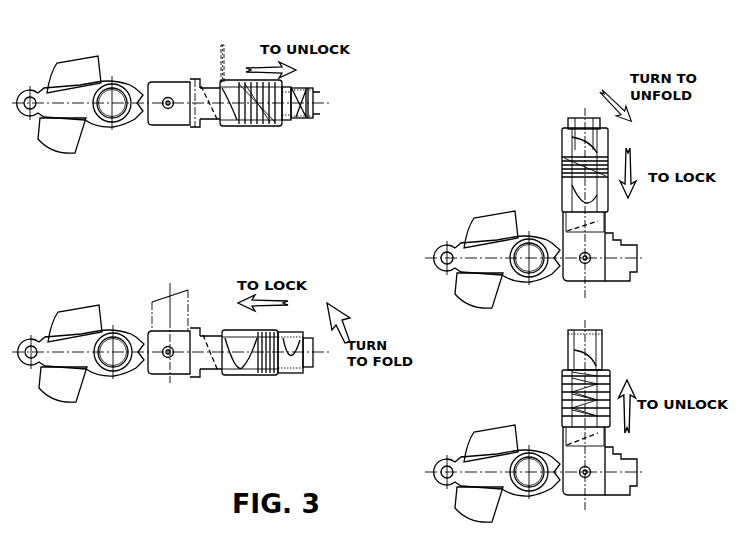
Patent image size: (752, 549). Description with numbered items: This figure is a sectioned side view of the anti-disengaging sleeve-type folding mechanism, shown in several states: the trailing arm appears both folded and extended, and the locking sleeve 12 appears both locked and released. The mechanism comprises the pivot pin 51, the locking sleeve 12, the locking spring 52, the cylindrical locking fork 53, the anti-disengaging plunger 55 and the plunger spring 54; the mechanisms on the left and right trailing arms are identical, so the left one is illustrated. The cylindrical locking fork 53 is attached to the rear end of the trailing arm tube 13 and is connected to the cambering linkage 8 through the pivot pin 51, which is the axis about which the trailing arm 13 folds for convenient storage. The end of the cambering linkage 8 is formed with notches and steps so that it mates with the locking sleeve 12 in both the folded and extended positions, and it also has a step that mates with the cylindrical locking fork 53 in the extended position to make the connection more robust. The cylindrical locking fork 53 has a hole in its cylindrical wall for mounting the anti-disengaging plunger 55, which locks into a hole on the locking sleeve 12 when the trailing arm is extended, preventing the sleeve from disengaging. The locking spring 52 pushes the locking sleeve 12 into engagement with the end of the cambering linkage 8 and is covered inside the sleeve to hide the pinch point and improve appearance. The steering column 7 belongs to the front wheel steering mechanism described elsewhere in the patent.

The steering column 7 is at (63, 135).
The cambering linkage 8 is at (102, 130).
The pivot pin 51 is at (170, 112).
The locking sleeve 12 is at (215, 130).
The locking spring 52 is at (245, 127).
The cylindrical locking fork 53 is at (282, 127).
The trailing arm tube 13 is at (295, 120).
The plunger spring 54 is at (307, 117).
The anti-disengaging plunger 55 is at (236, 100).